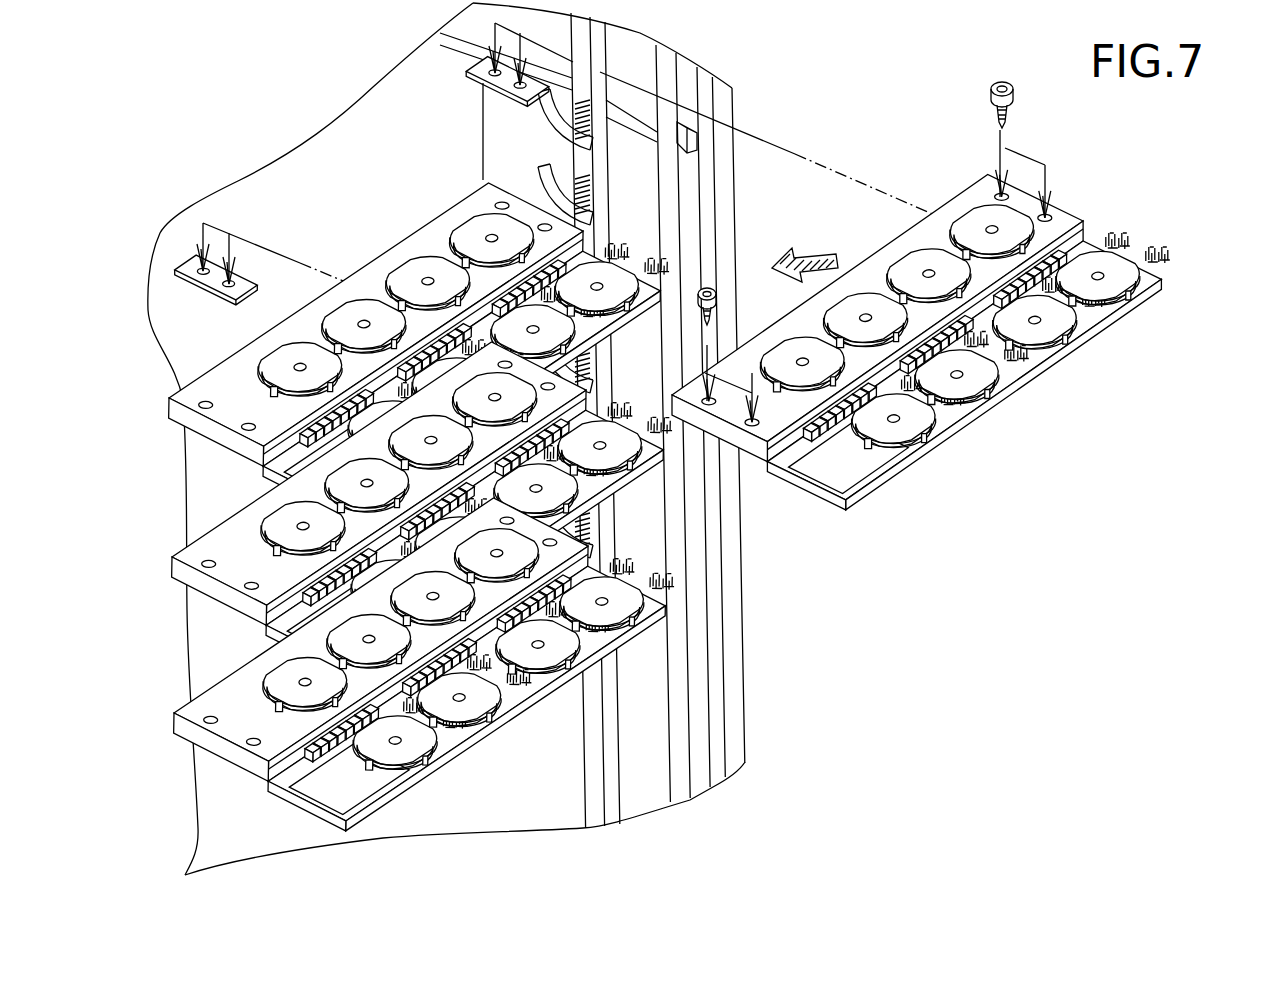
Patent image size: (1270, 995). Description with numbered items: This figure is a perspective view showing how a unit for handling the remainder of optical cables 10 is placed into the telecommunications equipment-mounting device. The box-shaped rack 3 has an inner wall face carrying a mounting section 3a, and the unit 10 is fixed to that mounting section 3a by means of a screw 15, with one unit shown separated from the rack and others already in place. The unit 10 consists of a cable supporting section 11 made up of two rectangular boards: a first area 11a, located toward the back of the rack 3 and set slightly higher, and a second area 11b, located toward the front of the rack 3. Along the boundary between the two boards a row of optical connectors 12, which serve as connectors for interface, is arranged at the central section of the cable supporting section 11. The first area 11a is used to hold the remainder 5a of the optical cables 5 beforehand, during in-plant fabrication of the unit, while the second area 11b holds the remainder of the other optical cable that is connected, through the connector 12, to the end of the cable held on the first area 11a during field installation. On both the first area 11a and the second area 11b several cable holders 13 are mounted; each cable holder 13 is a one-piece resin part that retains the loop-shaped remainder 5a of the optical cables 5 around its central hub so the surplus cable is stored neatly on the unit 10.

The rack 3 is at (482, 127).
The mounting section 3a is at (473, 78).
The optical cables 5 is at (975, 209).
The remainder of the optical cables 5a is at (802, 443).
The unit for handling the remainder of optical cables 10 is at (957, 343).
The cable supporting section 11 is at (916, 348).
The first area 11a is at (877, 317).
The second area 11b is at (964, 382).
The optical connector 12 is at (994, 318).
The cable holder 13 is at (1143, 276).
The screw 15 is at (992, 94).